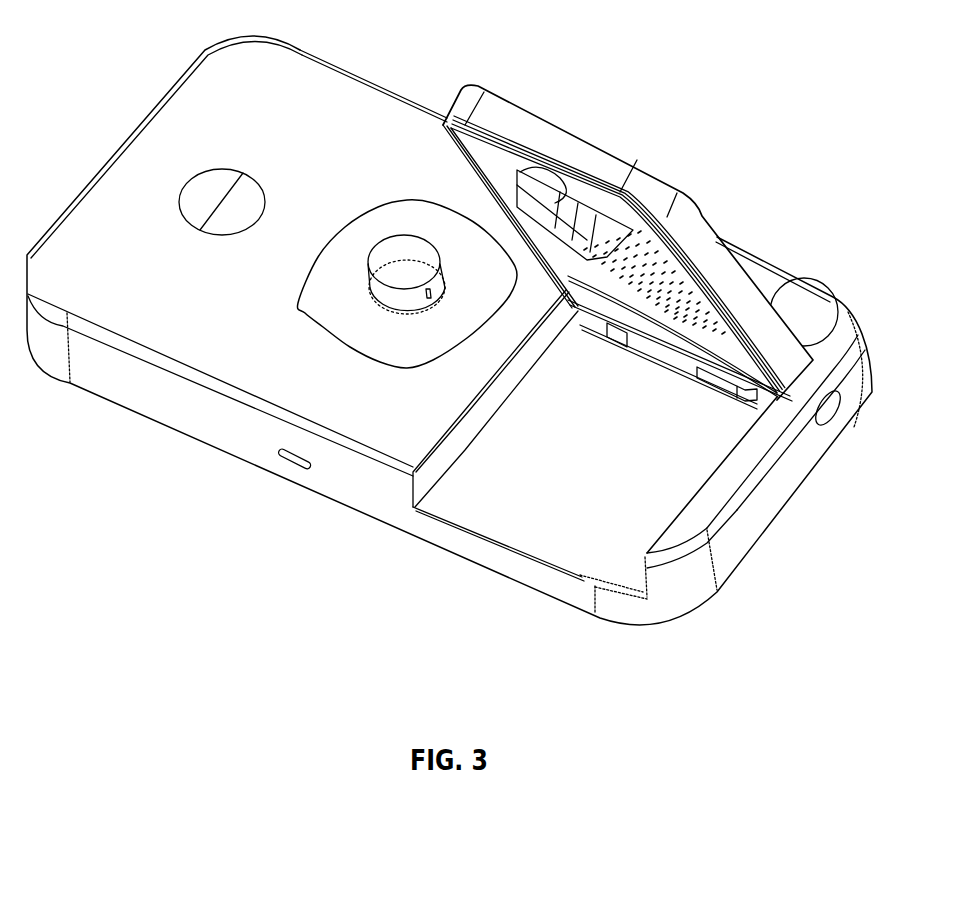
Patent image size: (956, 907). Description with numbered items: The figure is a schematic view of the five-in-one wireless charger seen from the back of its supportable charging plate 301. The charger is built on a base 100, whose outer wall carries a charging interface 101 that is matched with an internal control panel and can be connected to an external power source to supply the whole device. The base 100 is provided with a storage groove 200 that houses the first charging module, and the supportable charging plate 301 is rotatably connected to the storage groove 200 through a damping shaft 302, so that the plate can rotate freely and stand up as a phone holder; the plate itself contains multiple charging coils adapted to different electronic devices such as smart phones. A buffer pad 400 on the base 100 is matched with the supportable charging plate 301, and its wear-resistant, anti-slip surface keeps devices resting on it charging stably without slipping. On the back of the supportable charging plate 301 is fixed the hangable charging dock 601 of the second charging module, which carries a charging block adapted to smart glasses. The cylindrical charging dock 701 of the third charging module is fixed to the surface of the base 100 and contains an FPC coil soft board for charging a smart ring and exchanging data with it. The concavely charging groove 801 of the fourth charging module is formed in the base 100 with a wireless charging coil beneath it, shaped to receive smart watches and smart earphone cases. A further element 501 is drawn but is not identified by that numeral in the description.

The base 100 is at (770, 517).
The charging interface 101 is at (290, 457).
The storage groove 200 is at (455, 440).
The supportable charging plate 301 is at (690, 223).
The damping shaft 302 is at (707, 380).
The buffer pad 400 is at (787, 300).
The hook 501 is at (647, 305).
The hangable charging dock 601 is at (523, 255).
The cylindrical charging dock 701 is at (378, 268).
The concavely charging groove 801 is at (205, 180).